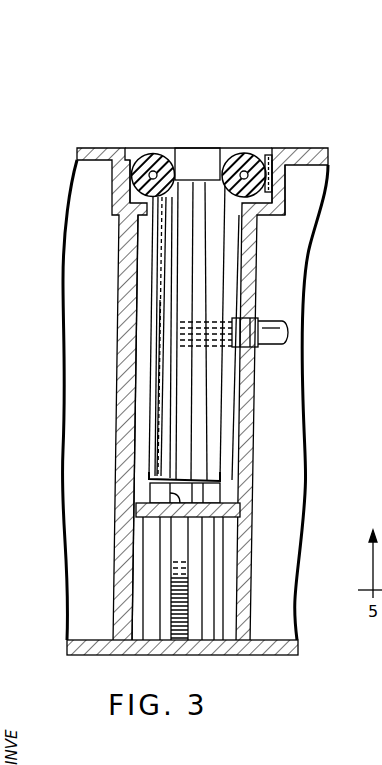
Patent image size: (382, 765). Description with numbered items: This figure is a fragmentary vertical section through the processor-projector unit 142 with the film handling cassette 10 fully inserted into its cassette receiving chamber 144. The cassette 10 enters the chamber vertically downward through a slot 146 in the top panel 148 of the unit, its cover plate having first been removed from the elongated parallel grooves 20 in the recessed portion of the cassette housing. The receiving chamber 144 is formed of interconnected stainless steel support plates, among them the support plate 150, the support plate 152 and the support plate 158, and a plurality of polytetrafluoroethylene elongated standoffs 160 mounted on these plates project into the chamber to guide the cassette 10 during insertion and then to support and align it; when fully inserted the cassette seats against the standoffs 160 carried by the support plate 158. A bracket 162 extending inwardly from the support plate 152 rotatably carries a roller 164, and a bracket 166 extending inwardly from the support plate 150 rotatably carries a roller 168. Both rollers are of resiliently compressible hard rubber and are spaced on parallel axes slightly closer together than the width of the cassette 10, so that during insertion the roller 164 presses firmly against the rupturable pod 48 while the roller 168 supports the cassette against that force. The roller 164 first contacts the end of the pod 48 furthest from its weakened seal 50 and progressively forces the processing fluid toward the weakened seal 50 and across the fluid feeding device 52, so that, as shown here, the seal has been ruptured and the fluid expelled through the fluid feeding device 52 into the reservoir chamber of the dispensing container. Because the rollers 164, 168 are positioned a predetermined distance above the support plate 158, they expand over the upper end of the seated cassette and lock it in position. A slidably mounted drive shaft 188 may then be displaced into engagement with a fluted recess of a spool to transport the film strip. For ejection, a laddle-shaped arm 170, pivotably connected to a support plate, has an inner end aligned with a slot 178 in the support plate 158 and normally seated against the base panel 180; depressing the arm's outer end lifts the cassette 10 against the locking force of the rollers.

The film handling cassette 10 is at (240, 412).
The elongated parallel grooves 20 is at (157, 288).
The rupturable pod 48 is at (160, 400).
The weakened seal 50 is at (163, 278).
The fluid feeding device 52 is at (167, 217).
The processor-projector unit 142 is at (340, 122).
The cassette receiving chamber 144 is at (193, 157).
The slot 146 is at (270, 152).
The top panel 148 is at (78, 148).
The support plate 150 is at (256, 233).
The support plate 152 is at (125, 235).
The support plate 158 is at (237, 531).
The elongated standoffs 160 is at (145, 206).
The bracket 162 is at (132, 160).
The roller 164 is at (148, 153).
The bracket 166 is at (262, 154).
The roller 168 is at (230, 154).
The laddle-shaped arm 170 is at (175, 562).
The slot 178 is at (170, 493).
The base panel 180 is at (270, 647).
The drive shaft 188 is at (267, 320).